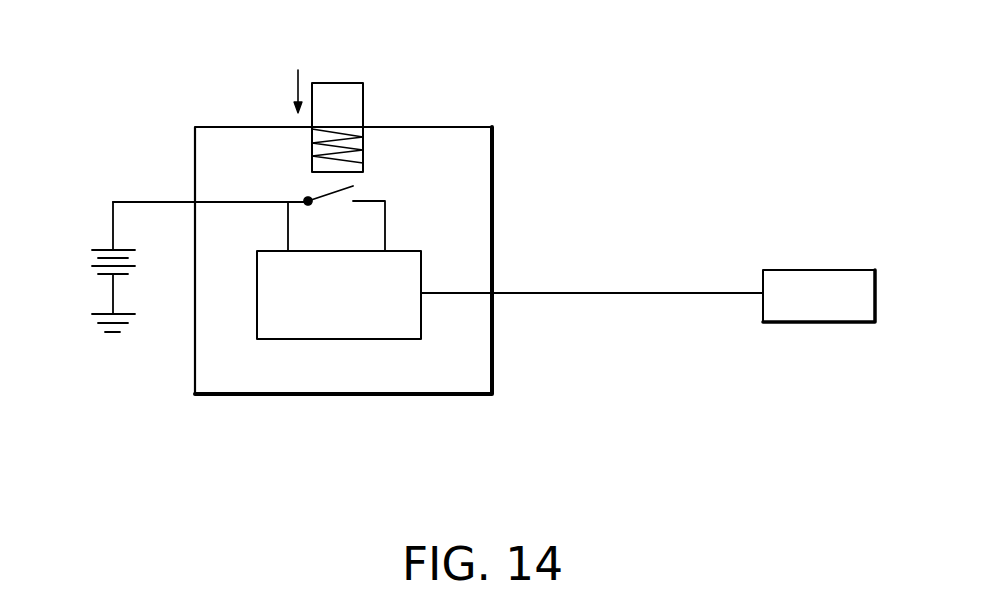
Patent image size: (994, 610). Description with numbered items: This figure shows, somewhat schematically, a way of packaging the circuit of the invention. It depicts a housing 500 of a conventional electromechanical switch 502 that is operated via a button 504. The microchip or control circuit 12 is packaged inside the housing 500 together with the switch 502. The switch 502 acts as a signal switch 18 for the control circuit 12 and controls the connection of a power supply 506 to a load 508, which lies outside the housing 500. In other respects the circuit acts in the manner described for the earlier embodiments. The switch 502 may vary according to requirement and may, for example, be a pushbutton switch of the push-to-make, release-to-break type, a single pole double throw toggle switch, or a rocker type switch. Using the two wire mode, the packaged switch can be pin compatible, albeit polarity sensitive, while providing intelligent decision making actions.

The housing 500 is at (492, 158).
The button 504 is at (355, 95).
The electromechanical switch 502 is at (265, 147).
The signal switch 18 is at (318, 195).
The power supply 506 is at (93, 250).
The control circuit 12 is at (357, 339).
The load 508 is at (807, 270).